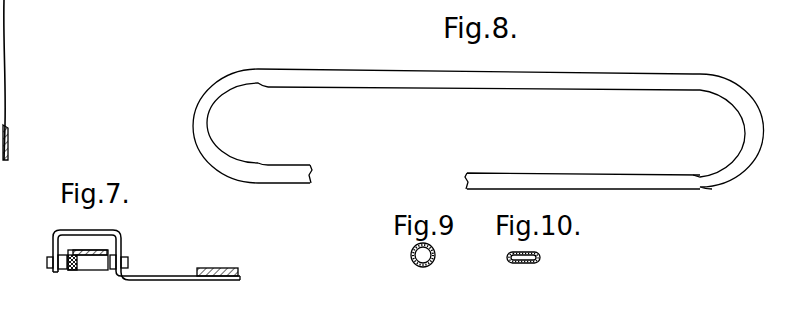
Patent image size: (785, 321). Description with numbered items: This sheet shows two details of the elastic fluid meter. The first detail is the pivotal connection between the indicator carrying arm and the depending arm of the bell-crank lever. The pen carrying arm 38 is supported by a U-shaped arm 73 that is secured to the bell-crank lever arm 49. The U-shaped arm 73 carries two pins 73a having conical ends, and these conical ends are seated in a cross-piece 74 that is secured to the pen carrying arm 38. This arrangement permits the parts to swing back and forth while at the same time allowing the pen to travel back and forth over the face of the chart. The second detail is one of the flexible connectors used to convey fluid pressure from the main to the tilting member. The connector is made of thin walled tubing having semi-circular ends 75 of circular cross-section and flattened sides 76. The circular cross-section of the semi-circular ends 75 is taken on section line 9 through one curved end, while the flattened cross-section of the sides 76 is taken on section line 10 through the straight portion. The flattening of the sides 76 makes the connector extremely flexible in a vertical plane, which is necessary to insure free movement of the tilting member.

In FIG. 8, the section line 9— 9 is at (232, 123).
In FIG. 8, the section line 10— 10 is at (362, 106).
In FIG. 7, the pen carrying arm 38 is at (76, 249).
In FIG. 7, the bell-crank lever arm 49 is at (223, 268).
In FIG. 7, the U-shaped arm 73 is at (122, 238).
In FIG. 7, the pins 73a is at (129, 262).
In FIG. 7, the cross-piece 74 is at (95, 266).
In FIG. 8, the semi-circular ends 75 is at (209, 156).
In FIG. 9, the semi-circular ends 75 is at (418, 265).
In FIG. 8, the flattened sides 76 is at (584, 177).
In FIG. 10, the flattened sides 76 is at (522, 265).